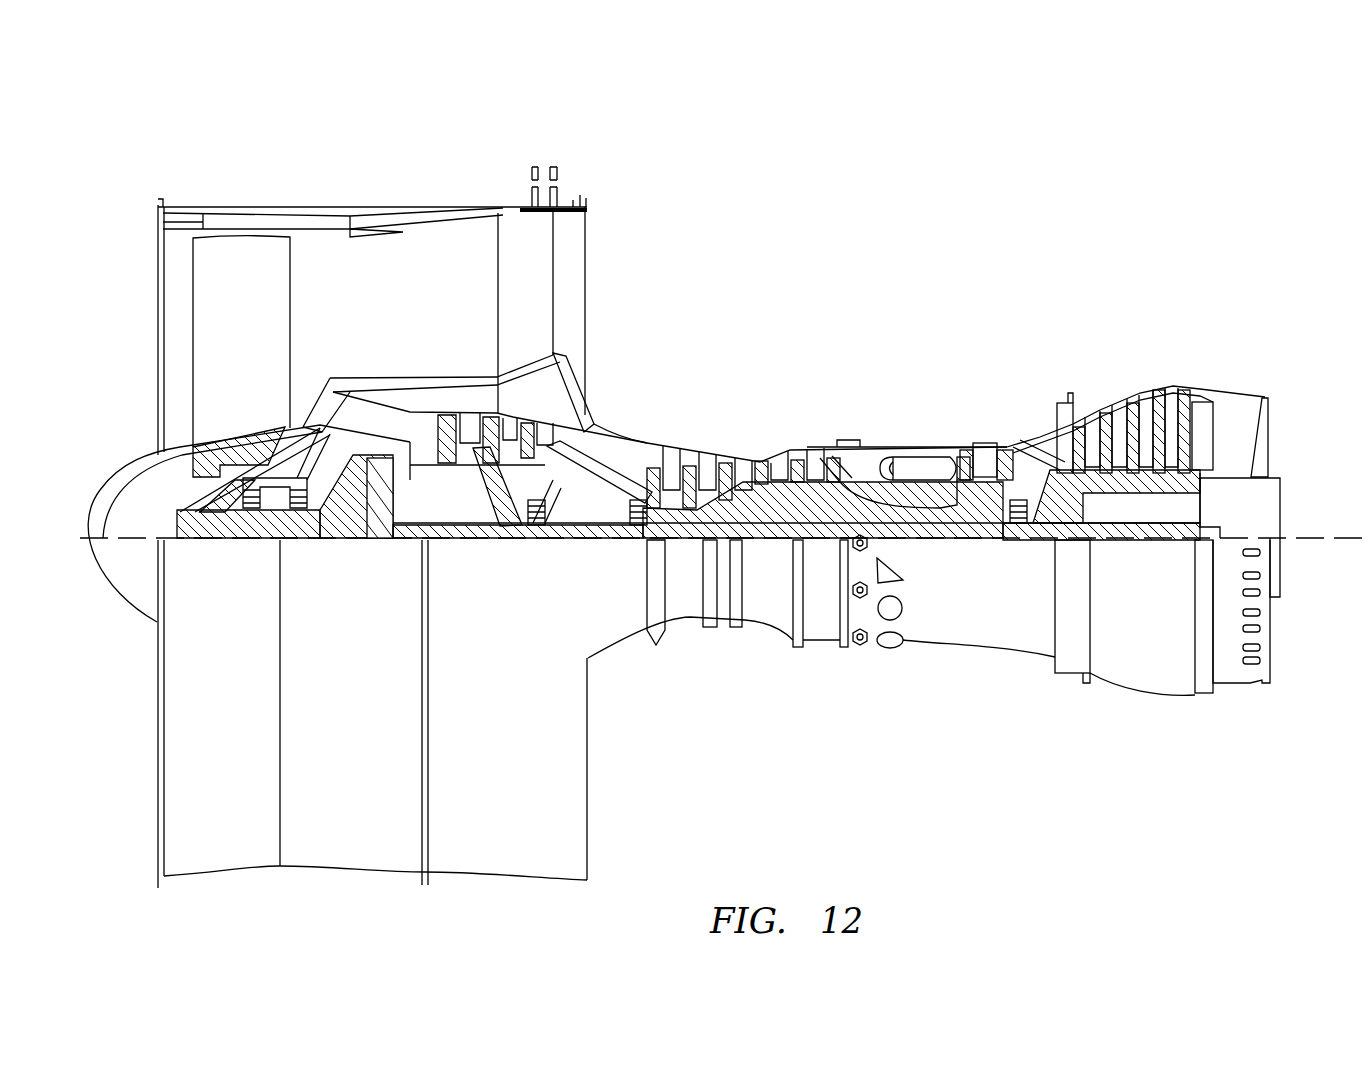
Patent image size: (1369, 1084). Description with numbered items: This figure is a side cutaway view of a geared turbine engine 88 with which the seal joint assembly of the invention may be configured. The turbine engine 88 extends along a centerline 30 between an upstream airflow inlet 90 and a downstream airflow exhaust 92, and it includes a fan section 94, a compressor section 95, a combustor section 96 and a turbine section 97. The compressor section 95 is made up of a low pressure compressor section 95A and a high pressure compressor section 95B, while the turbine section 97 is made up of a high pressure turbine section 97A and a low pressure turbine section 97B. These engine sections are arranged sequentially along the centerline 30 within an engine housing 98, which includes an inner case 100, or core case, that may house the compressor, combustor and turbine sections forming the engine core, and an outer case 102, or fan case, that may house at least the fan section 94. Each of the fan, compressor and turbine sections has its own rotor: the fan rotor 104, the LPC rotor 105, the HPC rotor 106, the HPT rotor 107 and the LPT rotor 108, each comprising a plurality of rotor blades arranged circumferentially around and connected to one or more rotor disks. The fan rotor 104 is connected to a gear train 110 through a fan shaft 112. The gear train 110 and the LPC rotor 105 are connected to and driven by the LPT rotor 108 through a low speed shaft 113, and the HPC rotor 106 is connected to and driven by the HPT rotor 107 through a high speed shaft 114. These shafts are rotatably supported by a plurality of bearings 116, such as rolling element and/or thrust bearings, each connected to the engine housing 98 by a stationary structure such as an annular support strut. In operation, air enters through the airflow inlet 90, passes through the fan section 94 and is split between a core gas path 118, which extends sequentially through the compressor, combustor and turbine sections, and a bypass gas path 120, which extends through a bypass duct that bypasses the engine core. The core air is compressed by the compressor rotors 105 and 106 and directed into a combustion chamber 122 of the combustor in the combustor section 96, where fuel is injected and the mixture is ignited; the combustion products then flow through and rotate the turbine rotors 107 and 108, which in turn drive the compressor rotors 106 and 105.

The centerline 30 is at (1332, 541).
The geared turbine engine 88 is at (124, 201).
The upstream airflow inlet 90 is at (160, 322).
The downstream airflow exhaust 92 is at (1270, 430).
The fan section 94 is at (340, 182).
The compressor section 95 is at (415, 116).
The low pressure compressor (LPC) section 95A is at (590, 164).
The high pressure compressor (HPC) section 95B is at (615, 366).
The combustor section 96 is at (840, 368).
The turbine section 97 is at (955, 294).
The high pressure turbine (HPT) section 97A is at (955, 368).
The low pressure turbine (LPT) section 97B is at (1230, 368).
The engine housing 98 is at (624, 676).
The inner case 100 is at (818, 650).
The outer case 102 is at (540, 882).
The fan rotor 104 is at (160, 448).
The LPC rotor 105 is at (497, 478).
The HPC rotor 106 is at (762, 497).
The HPT rotor 107 is at (978, 527).
The LPT rotor 108 is at (1135, 480).
The gear train 110 is at (372, 540).
The fan shaft 112 is at (233, 540).
The low speed shaft 113 is at (1145, 540).
The high speed shaft 114 is at (915, 520).
The bearings 116 is at (262, 510).
The core gas path 118 is at (614, 458).
The bypass gas path 120 is at (408, 315).
The combustion chamber 122 is at (905, 468).